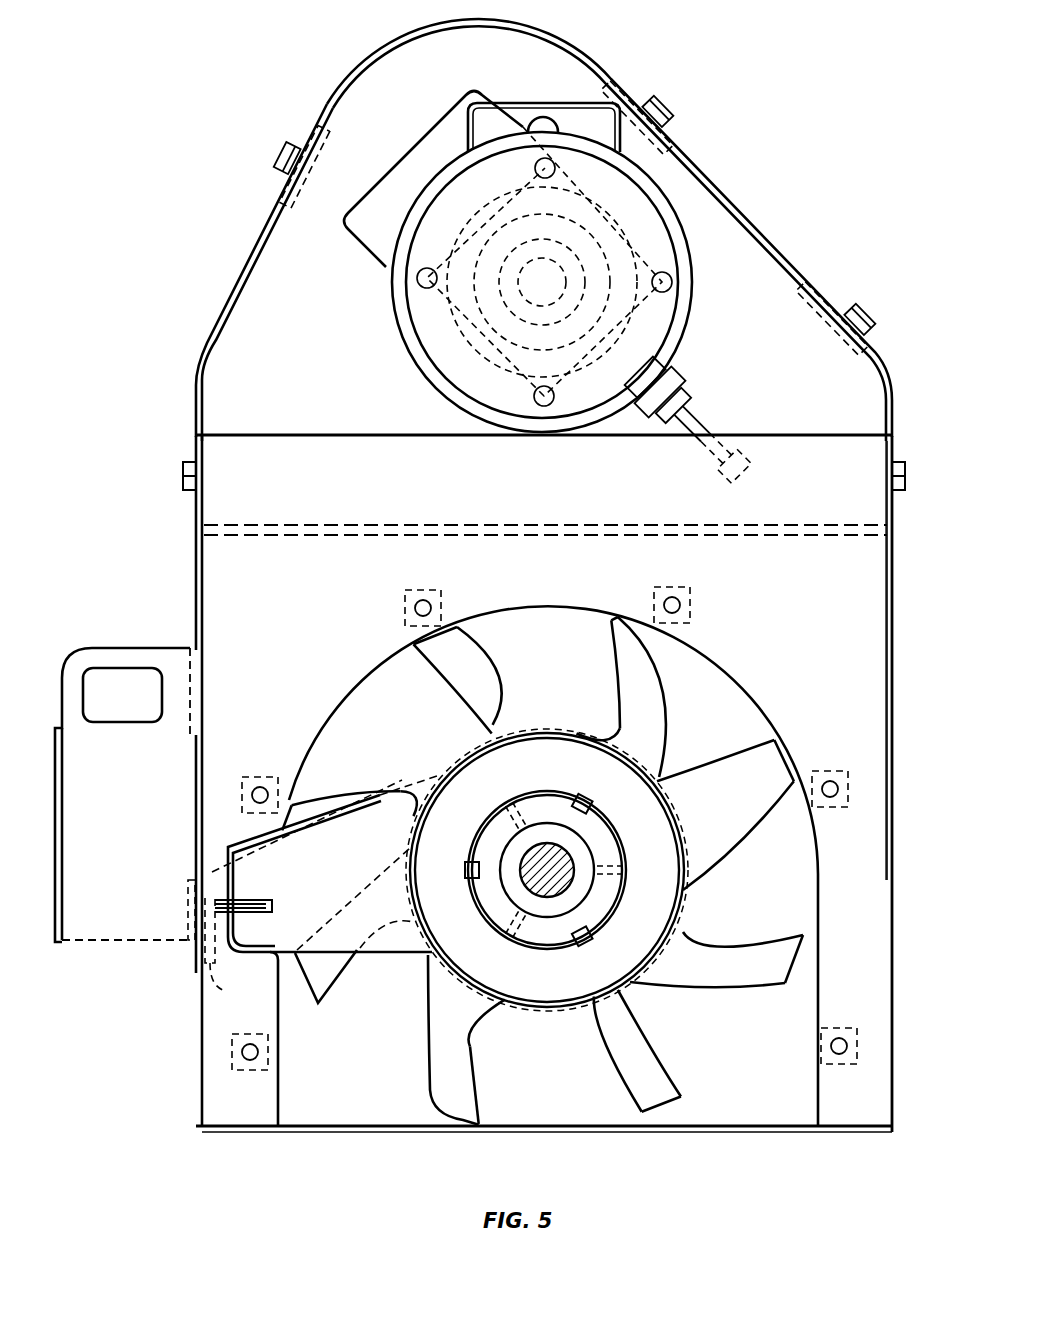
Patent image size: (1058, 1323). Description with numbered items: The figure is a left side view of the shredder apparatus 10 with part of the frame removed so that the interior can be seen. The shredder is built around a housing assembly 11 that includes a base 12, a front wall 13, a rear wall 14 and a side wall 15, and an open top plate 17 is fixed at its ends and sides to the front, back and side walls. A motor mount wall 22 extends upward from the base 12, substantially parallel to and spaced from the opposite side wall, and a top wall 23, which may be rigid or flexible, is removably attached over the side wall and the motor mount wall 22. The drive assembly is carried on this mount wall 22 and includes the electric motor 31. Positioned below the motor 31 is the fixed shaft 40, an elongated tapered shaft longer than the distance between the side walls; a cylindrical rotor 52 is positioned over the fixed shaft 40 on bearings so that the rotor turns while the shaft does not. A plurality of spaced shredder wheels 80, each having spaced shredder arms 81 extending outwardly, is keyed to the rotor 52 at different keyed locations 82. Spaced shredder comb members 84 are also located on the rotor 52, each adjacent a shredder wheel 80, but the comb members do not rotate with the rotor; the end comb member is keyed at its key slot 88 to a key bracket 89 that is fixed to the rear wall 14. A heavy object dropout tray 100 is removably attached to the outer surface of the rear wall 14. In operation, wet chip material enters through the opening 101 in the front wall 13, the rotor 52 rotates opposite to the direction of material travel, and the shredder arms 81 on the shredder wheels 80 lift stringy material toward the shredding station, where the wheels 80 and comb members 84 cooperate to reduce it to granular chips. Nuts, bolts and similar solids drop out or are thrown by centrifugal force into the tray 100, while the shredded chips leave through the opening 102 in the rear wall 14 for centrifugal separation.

The shredder apparatus 10 is at (662, 57).
The housing assembly 11 is at (196, 554).
The base 12 is at (362, 1125).
The front wall 13 is at (892, 660).
The rear wall 14 is at (196, 612).
The side wall 15 is at (553, 496).
The open top plate 17 is at (297, 524).
The motor mount wall 22 is at (262, 318).
The top wall 23 is at (713, 171).
The motor 31 is at (399, 342).
The fixed shaft 40 is at (548, 903).
The cylindrical rotor 52 is at (557, 803).
The shredder wheel 80 is at (687, 890).
The shredder arm 81 is at (457, 679).
The keyed location 82 is at (592, 803).
The shredder comb member 84 is at (387, 952).
The key slot 88 is at (263, 899).
The key bracket 89 is at (220, 944).
The heavy object dropout tray 100 is at (90, 915).
The opening in front wall 101 is at (892, 1032).
The opening in rear wall 102 is at (196, 1035).